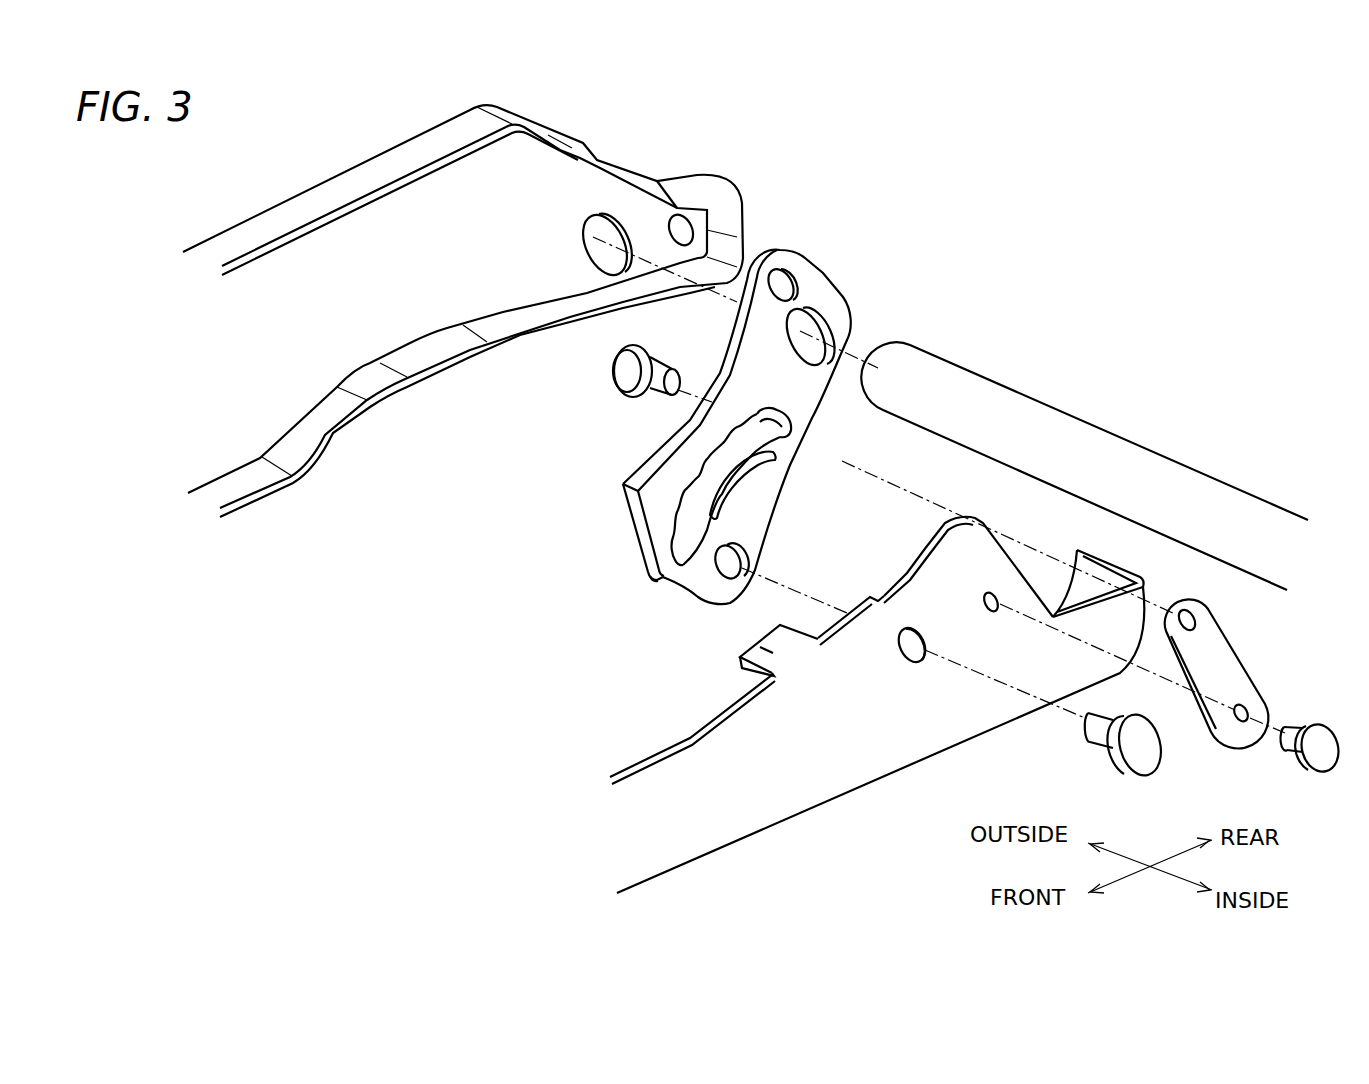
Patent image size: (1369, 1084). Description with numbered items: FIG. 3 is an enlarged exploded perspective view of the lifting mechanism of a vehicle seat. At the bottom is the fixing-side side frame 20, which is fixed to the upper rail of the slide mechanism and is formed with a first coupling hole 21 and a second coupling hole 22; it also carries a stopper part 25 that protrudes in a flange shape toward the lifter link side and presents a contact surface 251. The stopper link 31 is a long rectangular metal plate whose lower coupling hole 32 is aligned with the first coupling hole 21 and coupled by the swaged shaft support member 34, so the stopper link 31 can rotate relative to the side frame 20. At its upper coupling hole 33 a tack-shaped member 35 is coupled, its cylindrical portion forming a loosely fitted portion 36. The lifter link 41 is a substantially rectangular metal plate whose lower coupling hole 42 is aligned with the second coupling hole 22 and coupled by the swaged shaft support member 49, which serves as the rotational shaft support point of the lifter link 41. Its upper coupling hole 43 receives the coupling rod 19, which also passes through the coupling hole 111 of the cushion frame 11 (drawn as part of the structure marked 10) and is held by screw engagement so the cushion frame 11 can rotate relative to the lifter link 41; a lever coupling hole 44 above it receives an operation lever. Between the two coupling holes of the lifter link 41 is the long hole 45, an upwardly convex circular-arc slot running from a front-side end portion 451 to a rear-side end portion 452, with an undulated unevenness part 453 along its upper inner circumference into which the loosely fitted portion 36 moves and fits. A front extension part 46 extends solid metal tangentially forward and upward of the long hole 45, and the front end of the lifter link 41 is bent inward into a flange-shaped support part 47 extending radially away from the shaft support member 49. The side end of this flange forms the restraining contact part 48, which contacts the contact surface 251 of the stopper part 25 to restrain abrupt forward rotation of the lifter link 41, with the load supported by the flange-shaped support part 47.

The seat frame assembly 10 is at (463, 295).
The cushion frame 11 is at (358, 177).
The coupling hole 111 is at (606, 238).
The coupling rod 19 is at (1078, 435).
The fixing-side side frame 20 is at (812, 765).
The first coupling hole 21 is at (968, 608).
The second coupling hole 22 is at (918, 660).
The stopper part 25 is at (758, 675).
The contact surface 251 is at (745, 645).
The stopper link 31 is at (1230, 663).
The lower coupling hole 32 is at (1250, 712).
The upper coupling hole 33 is at (1198, 615).
The shaft support member 34 is at (1325, 742).
The tack-shaped member 35 is at (608, 372).
The loosely fitted portion 36 is at (618, 388).
The lifter link 41 is at (817, 286).
The lower coupling hole 42 is at (742, 562).
The upper coupling hole 43 is at (848, 336).
The lever coupling hole 44 is at (783, 283).
The long hole 45 is at (753, 470).
The front-side end portion 451 is at (653, 548).
The rear-side end portion 452 is at (790, 428).
The unevenness part 453 is at (697, 472).
The front extension part 46 is at (620, 485).
The flange-shaped support part 47 is at (628, 525).
The restraining contact part 48 is at (648, 583).
The shaft support member 49 is at (1152, 755).